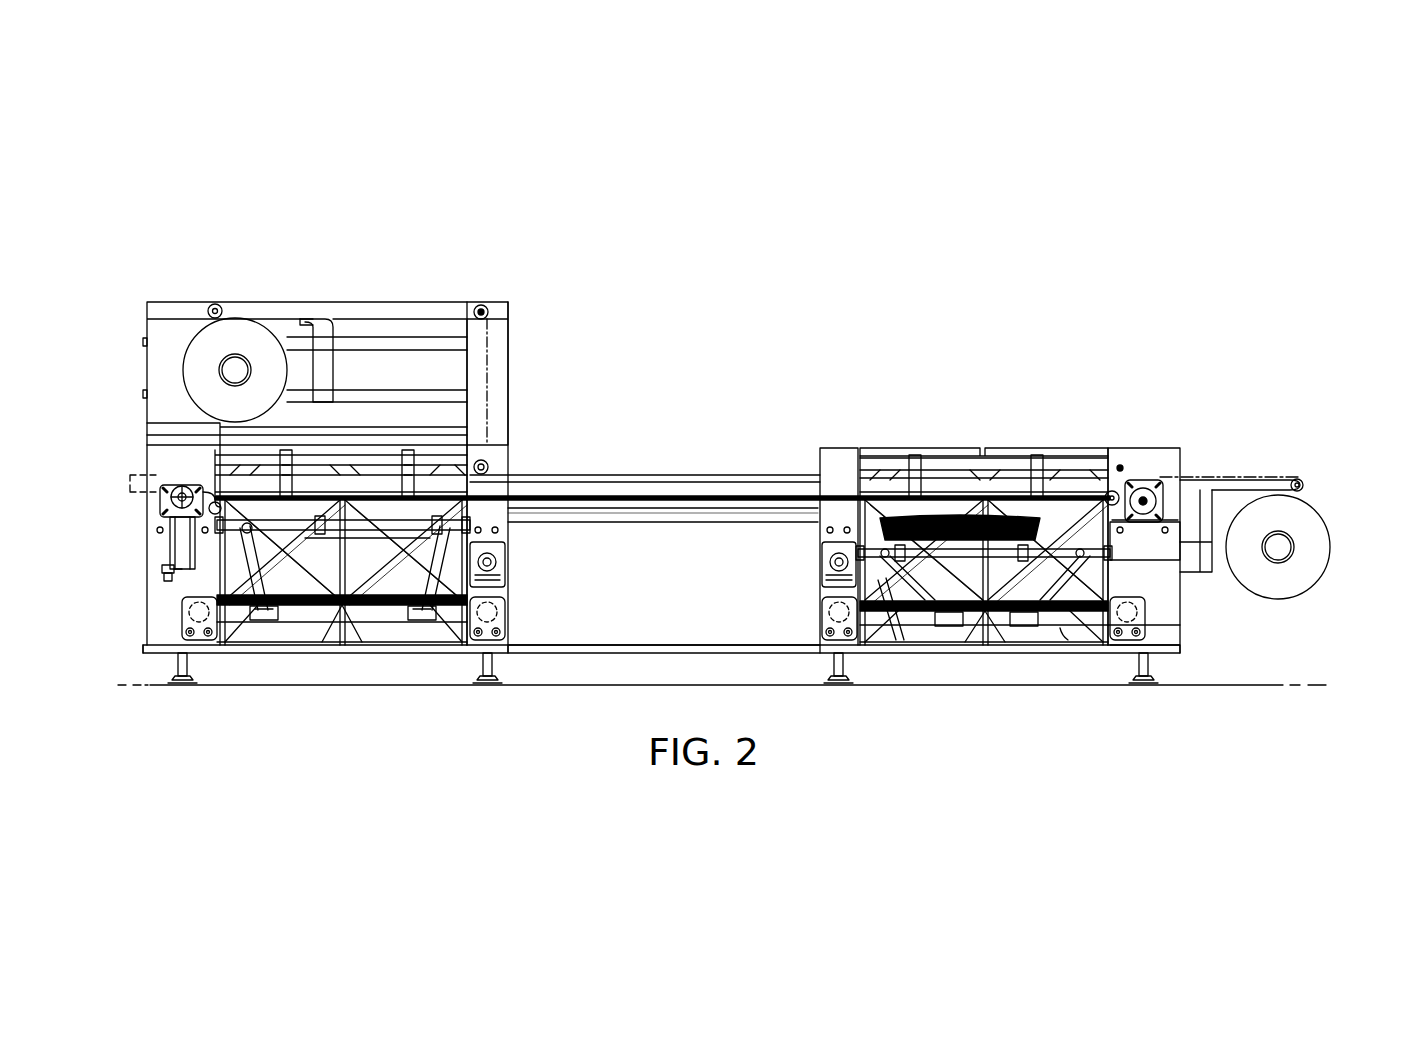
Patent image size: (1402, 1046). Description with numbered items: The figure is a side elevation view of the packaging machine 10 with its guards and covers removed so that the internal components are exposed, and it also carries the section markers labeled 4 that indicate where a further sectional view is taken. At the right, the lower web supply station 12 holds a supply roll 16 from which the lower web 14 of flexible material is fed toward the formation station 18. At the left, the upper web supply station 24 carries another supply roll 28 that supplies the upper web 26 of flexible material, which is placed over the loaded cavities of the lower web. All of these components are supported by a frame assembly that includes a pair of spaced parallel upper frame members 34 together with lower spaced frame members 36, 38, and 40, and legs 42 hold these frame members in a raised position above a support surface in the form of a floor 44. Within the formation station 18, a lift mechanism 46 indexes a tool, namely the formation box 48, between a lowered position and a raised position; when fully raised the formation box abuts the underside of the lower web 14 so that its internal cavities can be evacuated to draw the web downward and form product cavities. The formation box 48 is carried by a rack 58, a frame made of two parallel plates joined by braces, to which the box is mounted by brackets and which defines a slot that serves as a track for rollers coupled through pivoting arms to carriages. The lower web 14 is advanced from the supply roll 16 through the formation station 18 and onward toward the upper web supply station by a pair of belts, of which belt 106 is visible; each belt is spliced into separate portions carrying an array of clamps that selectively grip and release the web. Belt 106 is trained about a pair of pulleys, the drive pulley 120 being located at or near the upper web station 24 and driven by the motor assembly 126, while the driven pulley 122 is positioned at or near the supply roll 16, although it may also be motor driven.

The packaging machine 10 is at (1195, 178).
The lower web supply station 12 is at (1346, 496).
The lower web 14 is at (1262, 475).
The supply roll 16 is at (1331, 550).
The formation station 18 is at (1010, 416).
The upper web supply station 24 is at (430, 256).
The upper web 26 is at (490, 344).
The supply roll 28 is at (213, 345).
The upper frame members 34 is at (776, 475).
The lower frame member 36 is at (664, 512).
The lower frame member 38 is at (362, 650).
The lower frame member 40 is at (1000, 652).
The legs 42 is at (186, 670).
The floor 44 is at (1235, 686).
The lift mechanism 46 is at (1058, 645).
The formation box 48 is at (1032, 518).
The rack 58 is at (880, 580).
The belt 106 is at (603, 520).
The drive pulley 120 is at (165, 505).
The driven pulley 122 is at (1160, 480).
The motor assembly 126 is at (165, 567).
The section line 4- 4 is at (805, 540).